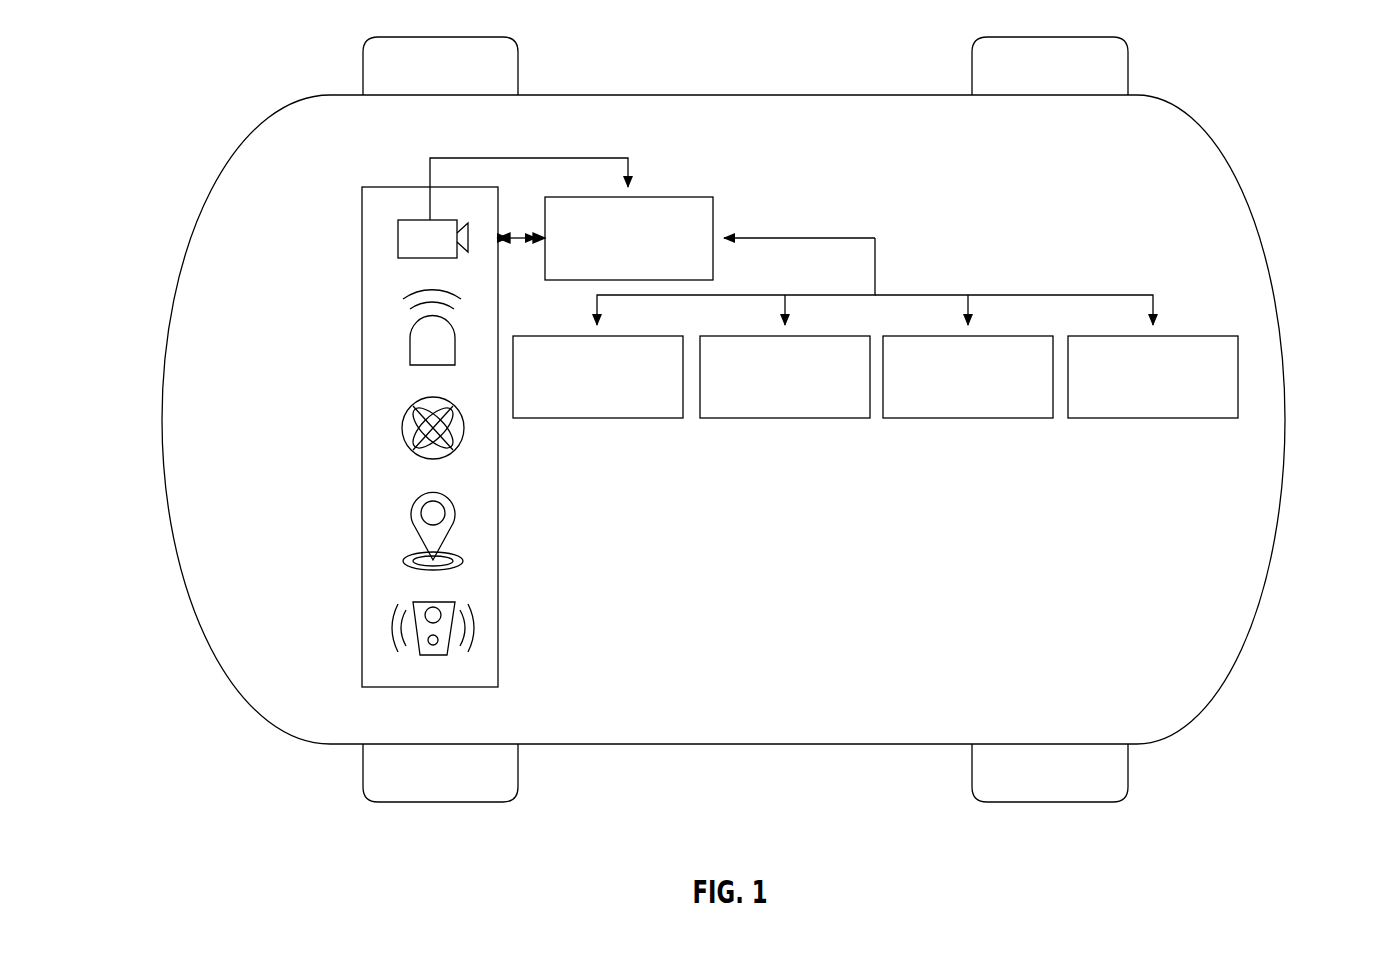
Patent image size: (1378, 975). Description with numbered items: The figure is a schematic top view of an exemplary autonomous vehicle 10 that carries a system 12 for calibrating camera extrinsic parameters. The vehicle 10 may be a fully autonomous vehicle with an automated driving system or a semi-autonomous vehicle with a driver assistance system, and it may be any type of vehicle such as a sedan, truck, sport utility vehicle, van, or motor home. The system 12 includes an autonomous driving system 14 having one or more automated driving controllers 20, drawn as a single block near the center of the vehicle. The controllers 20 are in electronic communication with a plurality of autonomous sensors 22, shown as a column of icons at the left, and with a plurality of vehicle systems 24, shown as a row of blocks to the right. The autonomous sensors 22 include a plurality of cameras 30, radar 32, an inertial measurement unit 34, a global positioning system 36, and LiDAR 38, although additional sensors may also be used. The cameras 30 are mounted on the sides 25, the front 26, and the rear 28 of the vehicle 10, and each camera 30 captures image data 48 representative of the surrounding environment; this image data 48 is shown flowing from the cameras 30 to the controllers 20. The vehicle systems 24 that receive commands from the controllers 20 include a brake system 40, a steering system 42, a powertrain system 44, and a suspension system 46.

The autonomous vehicle 10 is at (822, 95).
The system for calibrating camera extrinsic parameters 12 is at (667, 203).
The autonomous driving system 14 is at (584, 294).
The automated driving controllers 20 is at (645, 197).
The plurality of autonomous sensors 22 is at (414, 187).
The plurality of vehicle systems 24 is at (1014, 271).
The sides 25 is at (728, 95).
The front 26 is at (146, 498).
The rear 28 is at (1299, 382).
The plurality of cameras 30 is at (398, 238).
The radar 32 is at (410, 345).
The inertial measurement unit 34 is at (402, 428).
The global positioning system 36 is at (405, 520).
The LiDAR 38 is at (388, 624).
The brake system 40 is at (630, 336).
The steering system 42 is at (815, 336).
The powertrain system 44 is at (1000, 336).
The suspension system 46 is at (1185, 336).
The image data 48 is at (553, 158).